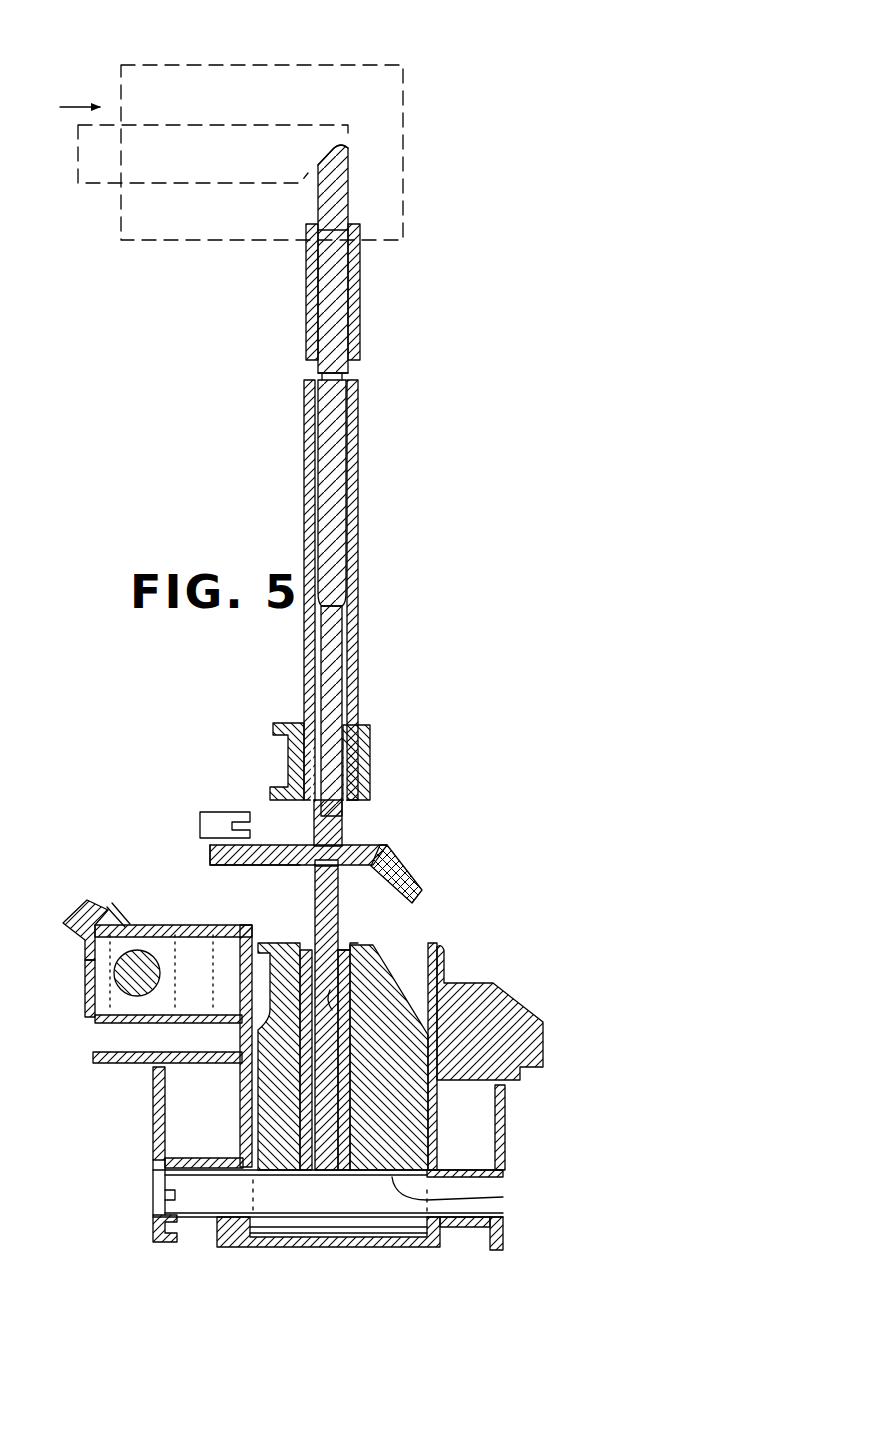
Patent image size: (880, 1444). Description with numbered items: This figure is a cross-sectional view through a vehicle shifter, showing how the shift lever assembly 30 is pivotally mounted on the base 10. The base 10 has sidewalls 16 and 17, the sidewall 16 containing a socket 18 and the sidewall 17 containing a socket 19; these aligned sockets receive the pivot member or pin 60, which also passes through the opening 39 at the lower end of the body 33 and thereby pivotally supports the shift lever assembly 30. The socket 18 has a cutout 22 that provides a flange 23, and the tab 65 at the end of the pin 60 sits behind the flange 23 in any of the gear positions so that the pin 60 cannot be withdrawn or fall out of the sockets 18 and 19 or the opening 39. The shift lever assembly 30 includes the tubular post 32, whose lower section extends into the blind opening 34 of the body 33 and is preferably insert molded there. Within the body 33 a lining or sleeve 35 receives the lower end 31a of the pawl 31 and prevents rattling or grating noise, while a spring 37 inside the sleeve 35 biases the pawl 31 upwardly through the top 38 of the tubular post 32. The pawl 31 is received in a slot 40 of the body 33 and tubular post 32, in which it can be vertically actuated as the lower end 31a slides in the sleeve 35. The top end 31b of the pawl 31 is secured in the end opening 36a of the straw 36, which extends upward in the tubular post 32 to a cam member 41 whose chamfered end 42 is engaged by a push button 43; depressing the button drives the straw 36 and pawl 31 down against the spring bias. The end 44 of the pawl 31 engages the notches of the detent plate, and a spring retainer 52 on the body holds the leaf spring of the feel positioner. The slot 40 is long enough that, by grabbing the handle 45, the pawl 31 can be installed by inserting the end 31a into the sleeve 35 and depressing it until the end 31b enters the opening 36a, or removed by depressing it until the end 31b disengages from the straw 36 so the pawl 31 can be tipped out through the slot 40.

The base 10 is at (500, 982).
The sidewall 16 is at (153, 1108).
The sidewall 17 is at (505, 1137).
The socket 18 is at (222, 1228).
The socket 19 is at (463, 1228).
The cutout 22 is at (187, 1220).
The flange 23 is at (158, 1198).
The shift lever assembly 30 is at (362, 539).
The pawl 31 is at (396, 845).
The lower end of pawl 31a is at (315, 940).
The top end of pawl 31b is at (352, 826).
The tubular post 32 is at (360, 392).
The body 33 is at (382, 983).
The blind opening 34 is at (352, 1118).
The lining/sleeve 35 is at (338, 1053).
The straw 36 is at (330, 677).
The end opening of straw 36a is at (318, 820).
The spring 37 is at (367, 950).
The top of tubular post 38 is at (307, 317).
The opening 39 is at (503, 1197).
The slot 40 is at (308, 888).
The cam member 41 is at (337, 193).
The chamfered end 42 is at (320, 157).
The push button 43 is at (227, 142).
The end of pawl 44 is at (300, 866).
The handle 45 is at (415, 882).
The spring retainer 52 is at (212, 812).
The pivot member or pin 60 is at (348, 1210).
The tab 65 is at (157, 1173).